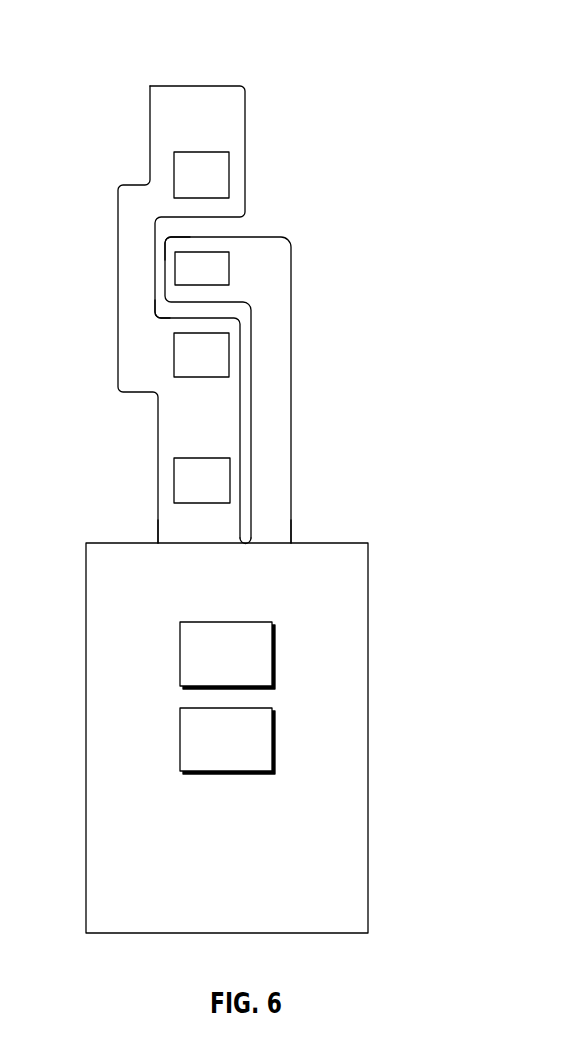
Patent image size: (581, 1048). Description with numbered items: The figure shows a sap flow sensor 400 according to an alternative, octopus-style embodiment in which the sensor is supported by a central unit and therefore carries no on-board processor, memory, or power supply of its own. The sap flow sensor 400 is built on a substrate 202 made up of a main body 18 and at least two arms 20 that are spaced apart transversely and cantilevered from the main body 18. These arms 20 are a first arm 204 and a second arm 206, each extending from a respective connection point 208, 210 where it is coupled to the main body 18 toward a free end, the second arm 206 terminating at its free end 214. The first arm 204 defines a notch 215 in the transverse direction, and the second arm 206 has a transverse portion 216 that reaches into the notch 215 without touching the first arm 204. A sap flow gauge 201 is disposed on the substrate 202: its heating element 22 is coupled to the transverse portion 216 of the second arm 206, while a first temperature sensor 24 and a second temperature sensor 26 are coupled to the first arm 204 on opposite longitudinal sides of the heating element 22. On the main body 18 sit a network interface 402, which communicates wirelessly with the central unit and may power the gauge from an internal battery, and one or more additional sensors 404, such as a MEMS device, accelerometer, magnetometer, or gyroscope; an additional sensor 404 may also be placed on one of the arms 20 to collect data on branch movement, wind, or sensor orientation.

The sap flow sensor 400 is at (502, 98).
The sap flow gauge 201 is at (320, 143).
The arms 20 is at (204, 315).
The first arm 204 is at (165, 440).
The second arm 206 is at (325, 395).
The free end 214 is at (198, 237).
The notch 215 is at (150, 311).
The transverse portion 216 is at (183, 250).
The second temperature sensor 26 is at (215, 151).
The heating element 22 is at (181, 276).
The first temperature sensor 24 is at (180, 368).
The additional sensors 404 is at (180, 478).
The network interface 402 is at (245, 753).
The connection point 208 is at (155, 540).
The connection point 210 is at (292, 540).
The substrate 202 is at (338, 643).
The main body 18 is at (343, 742).